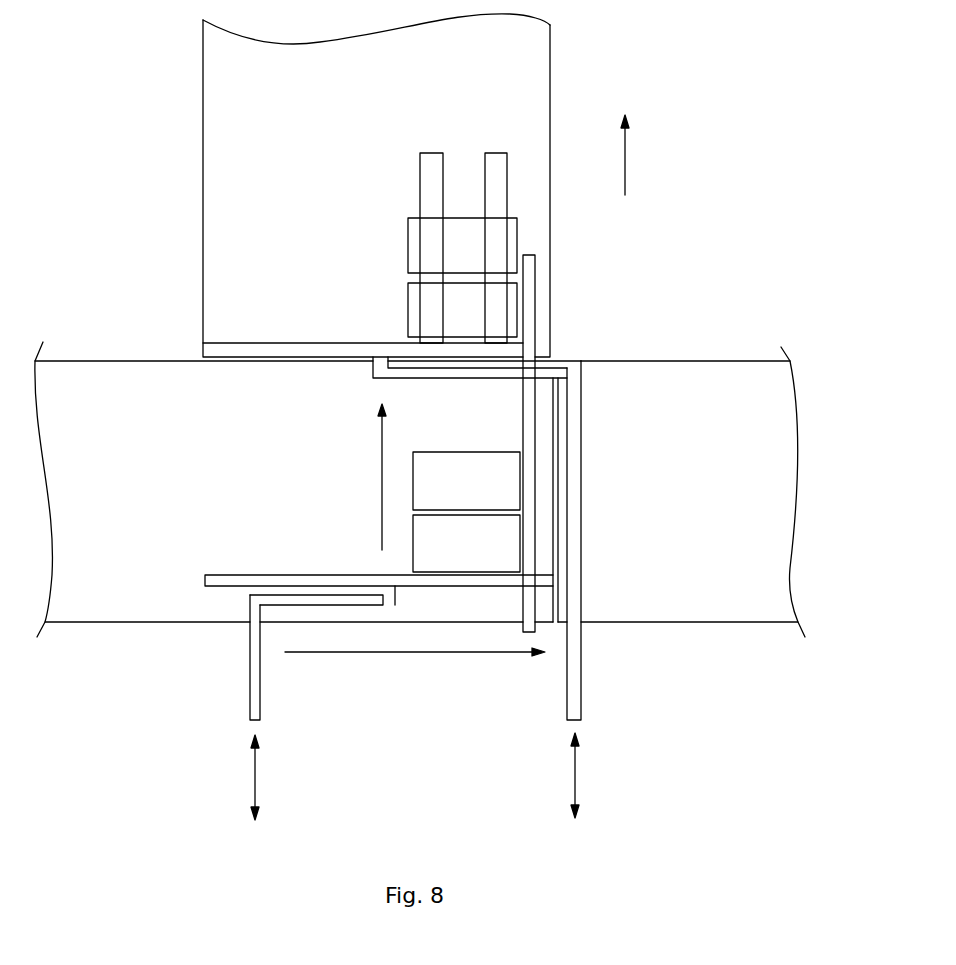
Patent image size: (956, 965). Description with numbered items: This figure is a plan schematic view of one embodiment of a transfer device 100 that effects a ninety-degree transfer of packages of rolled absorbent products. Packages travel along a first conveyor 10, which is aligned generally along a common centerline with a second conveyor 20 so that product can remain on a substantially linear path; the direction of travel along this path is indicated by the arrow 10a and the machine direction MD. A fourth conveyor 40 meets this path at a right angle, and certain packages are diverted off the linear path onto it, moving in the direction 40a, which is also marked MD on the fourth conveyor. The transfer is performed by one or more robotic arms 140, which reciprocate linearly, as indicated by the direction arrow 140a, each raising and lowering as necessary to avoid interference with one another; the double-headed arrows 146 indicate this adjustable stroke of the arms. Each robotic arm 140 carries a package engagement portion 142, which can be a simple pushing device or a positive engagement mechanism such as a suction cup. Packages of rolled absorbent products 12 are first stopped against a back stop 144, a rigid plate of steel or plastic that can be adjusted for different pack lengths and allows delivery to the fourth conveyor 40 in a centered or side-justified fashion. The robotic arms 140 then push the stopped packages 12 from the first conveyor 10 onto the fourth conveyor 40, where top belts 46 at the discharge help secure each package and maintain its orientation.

The first conveyor 10 is at (95, 603).
The second conveyor 20 is at (752, 607).
The fourth conveyor 40 is at (530, 72).
The top belts 46 is at (490, 185).
The fastener elements 12 is at (476, 259).
The back stop 144 is at (548, 343).
The package engagement portions 142 is at (560, 362).
The robotic arms 140 is at (250, 700).
The bracket direction 140a is at (380, 492).
The panel direction 40a is at (628, 158).
The panel direction 10a is at (375, 656).
The machine direction MD is at (628, 183).
The adjustment range 146 is at (262, 780).
The transfer device 100 is at (795, 132).